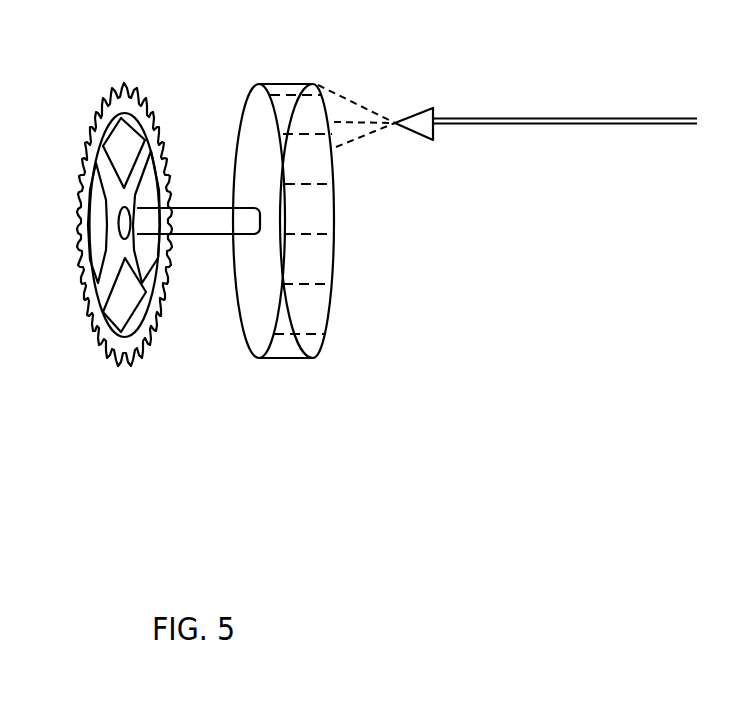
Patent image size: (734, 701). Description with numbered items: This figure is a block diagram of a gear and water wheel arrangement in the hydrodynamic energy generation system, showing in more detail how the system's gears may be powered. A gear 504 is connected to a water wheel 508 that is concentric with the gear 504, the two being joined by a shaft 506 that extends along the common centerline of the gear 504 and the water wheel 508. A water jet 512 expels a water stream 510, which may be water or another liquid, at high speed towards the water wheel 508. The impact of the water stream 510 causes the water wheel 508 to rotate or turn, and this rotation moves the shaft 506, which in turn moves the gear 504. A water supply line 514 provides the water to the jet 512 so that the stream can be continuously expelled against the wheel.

The gear 504 is at (151, 200).
The shaft 506 is at (198, 270).
The water wheel 508 is at (299, 196).
The water stream 510 is at (384, 96).
The water jet 512 is at (454, 99).
The water supply line 514 is at (565, 91).